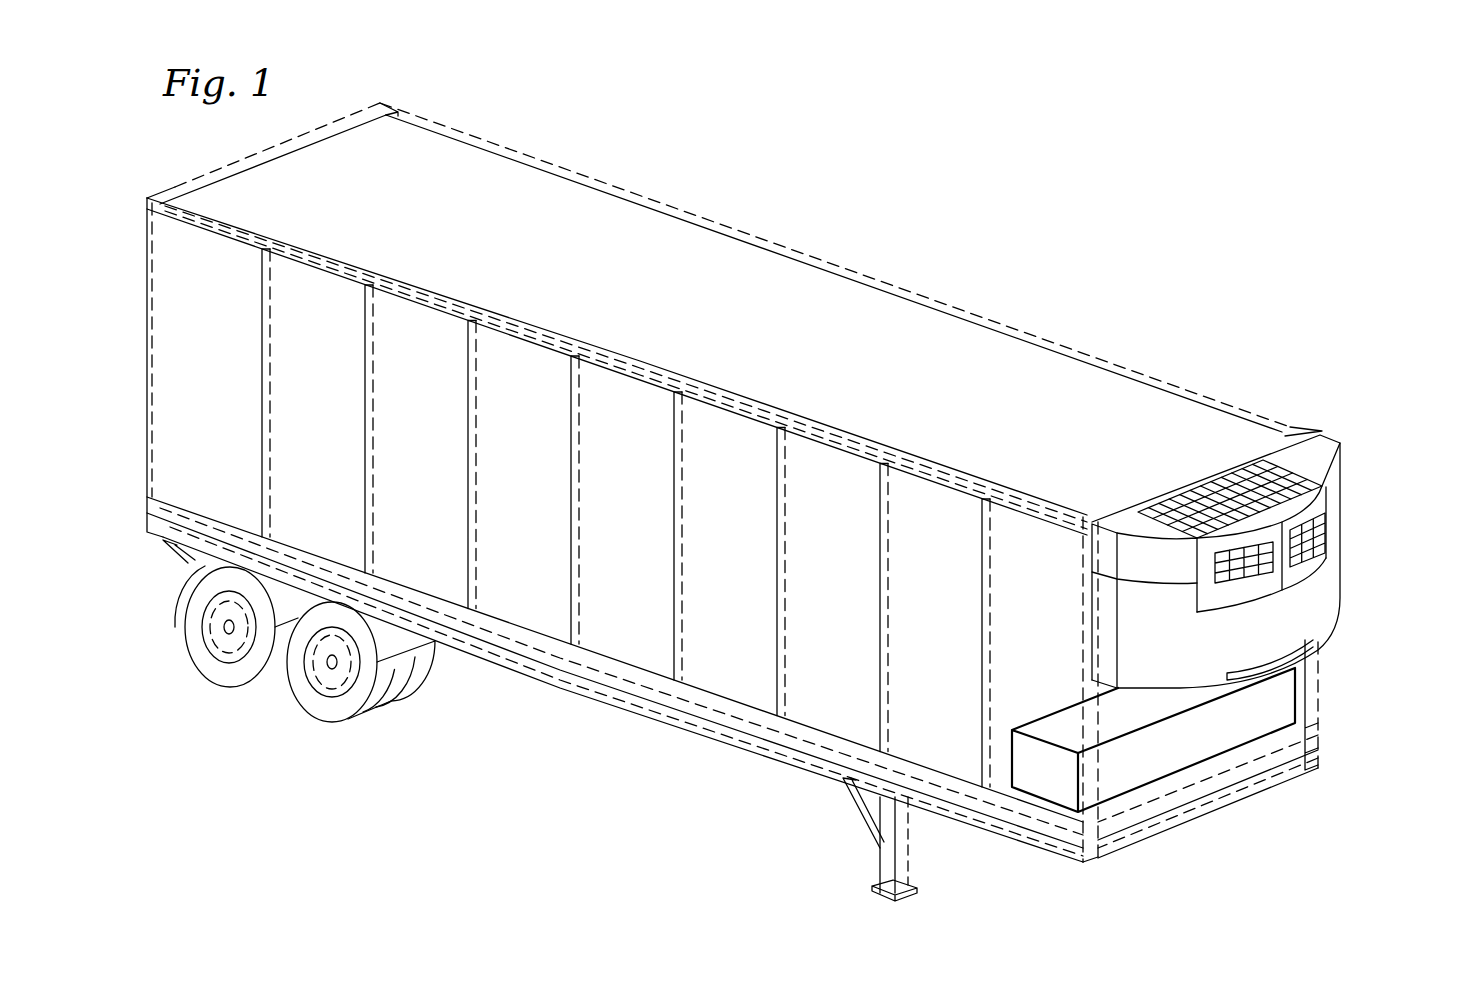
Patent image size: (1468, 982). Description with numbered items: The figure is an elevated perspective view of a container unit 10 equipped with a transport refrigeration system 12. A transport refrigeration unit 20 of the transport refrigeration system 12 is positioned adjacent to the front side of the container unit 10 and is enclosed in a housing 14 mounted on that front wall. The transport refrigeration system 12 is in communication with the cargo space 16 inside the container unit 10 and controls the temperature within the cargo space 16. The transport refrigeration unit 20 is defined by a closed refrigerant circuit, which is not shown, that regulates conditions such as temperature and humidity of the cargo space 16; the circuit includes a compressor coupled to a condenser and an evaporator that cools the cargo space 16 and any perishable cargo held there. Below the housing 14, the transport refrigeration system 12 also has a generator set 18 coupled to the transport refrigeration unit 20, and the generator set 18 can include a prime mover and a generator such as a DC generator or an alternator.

The container unit 10 is at (1098, 205).
The transport refrigeration system 12 is at (1341, 410).
The housing 14 is at (1333, 585).
The cargo space 16 is at (955, 425).
The generator set 18 is at (1275, 715).
The transport refrigeration unit 20 is at (1335, 528).